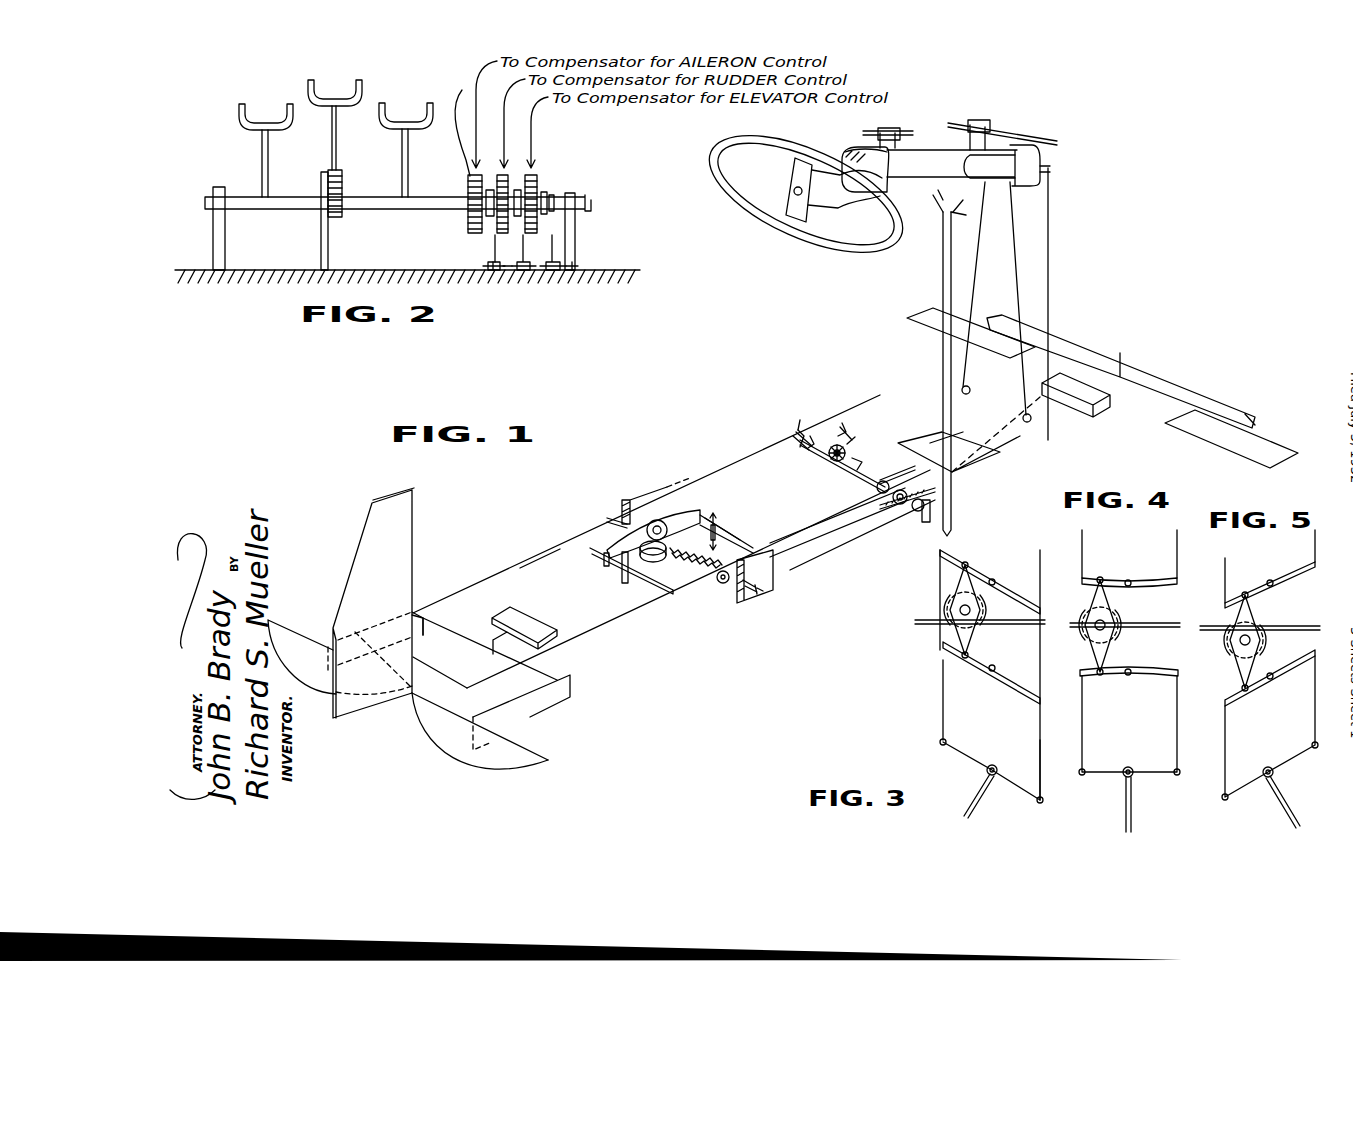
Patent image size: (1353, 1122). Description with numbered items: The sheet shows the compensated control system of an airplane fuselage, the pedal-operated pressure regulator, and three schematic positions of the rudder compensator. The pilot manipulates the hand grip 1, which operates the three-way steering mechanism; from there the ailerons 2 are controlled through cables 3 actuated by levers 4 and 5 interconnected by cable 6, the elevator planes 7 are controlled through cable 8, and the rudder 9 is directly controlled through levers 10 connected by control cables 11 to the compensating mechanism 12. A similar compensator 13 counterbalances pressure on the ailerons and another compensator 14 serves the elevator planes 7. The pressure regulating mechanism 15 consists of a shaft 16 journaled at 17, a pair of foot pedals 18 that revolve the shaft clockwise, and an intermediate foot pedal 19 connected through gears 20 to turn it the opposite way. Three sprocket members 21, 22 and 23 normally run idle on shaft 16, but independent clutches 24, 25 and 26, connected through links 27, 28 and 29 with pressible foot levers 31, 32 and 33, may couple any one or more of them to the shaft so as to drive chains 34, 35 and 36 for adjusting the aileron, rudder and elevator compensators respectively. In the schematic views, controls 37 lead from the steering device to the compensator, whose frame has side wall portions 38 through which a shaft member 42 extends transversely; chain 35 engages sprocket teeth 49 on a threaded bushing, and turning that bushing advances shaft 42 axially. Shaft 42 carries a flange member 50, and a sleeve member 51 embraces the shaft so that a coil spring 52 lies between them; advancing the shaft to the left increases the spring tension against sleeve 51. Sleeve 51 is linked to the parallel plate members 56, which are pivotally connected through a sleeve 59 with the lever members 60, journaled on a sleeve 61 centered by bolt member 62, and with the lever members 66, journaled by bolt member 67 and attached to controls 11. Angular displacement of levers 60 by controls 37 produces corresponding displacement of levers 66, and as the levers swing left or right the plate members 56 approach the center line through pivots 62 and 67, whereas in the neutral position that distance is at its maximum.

In FIG. 1, the hand grip 1 is at (778, 222).
In FIG. 1, the ailerons 2 is at (956, 320).
In FIG. 1, the cables 3 is at (1140, 372).
In FIG. 1, the lever 4 is at (1037, 438).
In FIG. 1, the lever 5 is at (1052, 162).
In FIG. 1, the cable 6 is at (1050, 252).
In FIG. 1, the elevator planes 7 is at (312, 680).
In FIG. 1, the cable 8 is at (548, 618).
In FIG. 1, the rudder 9 is at (414, 545).
In FIG. 3, the rudder 9 is at (978, 812).
In FIG. 4, the rudder 9 is at (1124, 808).
In FIG. 5, the rudder 9 is at (1284, 806).
In FIG. 1, the levers 10 is at (448, 650).
In FIG. 1, the control cables 11 is at (556, 562).
In FIG. 3, the control cables 11 is at (1012, 740).
In FIG. 4, the control cables 11 is at (1084, 722).
In FIG. 5, the control cables 11 is at (1310, 730).
In FIG. 1, the compensating mechanism 12 is at (622, 469).
In FIG. 3, the compensating mechanism 12 is at (935, 613).
In FIG. 4, the compensating mechanism 12 is at (1147, 613).
In FIG. 1, the compensator 13 is at (1080, 400).
In FIG. 1, the compensator 14 is at (518, 575).
In FIG. 1, the pressure regulating mechanism 15 is at (810, 433).
In FIG. 2, the shaft 16 is at (412, 210).
In FIG. 1, the shaft 16 is at (808, 462).
In FIG. 2, the journals 17 is at (213, 232).
In FIG. 1, the journals 17 is at (926, 524).
In FIG. 2, the foot pedals 18 is at (262, 140).
In FIG. 1, the foot pedals 18 is at (814, 436).
In FIG. 2, the intermediate foot pedal 19 is at (333, 100).
In FIG. 1, the intermediate foot pedal 19 is at (846, 428).
In FIG. 2, the gears 20 is at (342, 192).
In FIG. 1, the gears 20 is at (834, 466).
In FIG. 2, the sprocket member 21 is at (476, 218).
In FIG. 1, the sprocket member 21 is at (876, 486).
In FIG. 2, the sprocket member 22 is at (500, 232).
In FIG. 1, the sprocket member 22 is at (900, 505).
In FIG. 2, the sprocket member 23 is at (547, 196).
In FIG. 1, the sprocket member 23 is at (906, 540).
In FIG. 2, the clutch 24 is at (486, 176).
In FIG. 2, the clutch 25 is at (510, 200).
In FIG. 2, the clutch 26 is at (556, 200).
In FIG. 2, the link 27 is at (492, 272).
In FIG. 2, the link 28 is at (522, 272).
In FIG. 2, the link 29 is at (574, 272).
In FIG. 2, the foot lever 31 is at (486, 266).
In FIG. 2, the foot lever 32 is at (506, 272).
In FIG. 2, the foot lever 33 is at (552, 272).
In FIG. 2, the chain 34 is at (456, 96).
In FIG. 1, the chain 34 is at (916, 478).
In FIG. 2, the chain 35 is at (512, 172).
In FIG. 1, the chain 35 is at (806, 554).
In FIG. 2, the chain 36 is at (537, 182).
In FIG. 1, the chain 36 is at (932, 497).
In FIG. 1, the controls 37 is at (742, 482).
In FIG. 3, the controls 37 is at (1036, 556).
In FIG. 4, the controls 37 is at (1160, 542).
In FIG. 5, the controls 37 is at (1227, 570).
In FIG. 1, the side wall portions 38 is at (648, 490).
In FIG. 3, the shaft member 42 is at (1022, 626).
In FIG. 4, the shaft member 42 is at (1152, 628).
In FIG. 5, the shaft member 42 is at (1282, 632).
In FIG. 1, the sprocket teeth 49 is at (740, 596).
In FIG. 1, the flange member 50 is at (720, 585).
In FIG. 1, the sleeve member 51 is at (656, 568).
In FIG. 1, the coil spring 52 is at (690, 572).
In FIG. 1, the parallel plate members 56 is at (705, 508).
In FIG. 3, the parallel plate members 56 is at (962, 598).
In FIG. 4, the parallel plate members 56 is at (1094, 606).
In FIG. 5, the parallel plate members 56 is at (1256, 604).
In FIG. 1, the sleeve 59 is at (704, 515).
In FIG. 1, the lever members 60 is at (736, 540).
In FIG. 3, the lever members 60 is at (998, 590).
In FIG. 4, the lever members 60 is at (1136, 578).
In FIG. 5, the lever members 60 is at (1272, 574).
In FIG. 1, the sleeve 61 is at (713, 522).
In FIG. 4, the bolt member 62 is at (1128, 578).
In FIG. 3, the lever members 66 is at (1006, 682).
In FIG. 4, the lever members 66 is at (1152, 680).
In FIG. 5, the lever members 66 is at (1284, 676).
In FIG. 1, the bolt member 67 is at (618, 586).
In FIG. 4, the bolt member 67 is at (1126, 676).